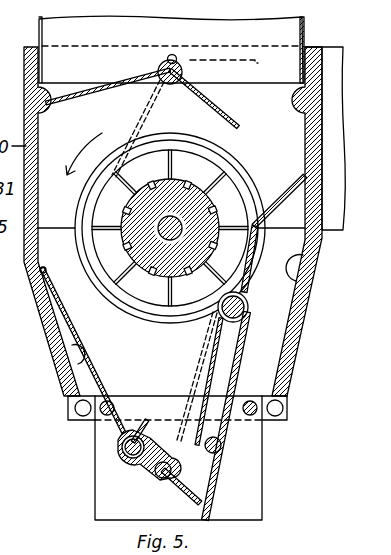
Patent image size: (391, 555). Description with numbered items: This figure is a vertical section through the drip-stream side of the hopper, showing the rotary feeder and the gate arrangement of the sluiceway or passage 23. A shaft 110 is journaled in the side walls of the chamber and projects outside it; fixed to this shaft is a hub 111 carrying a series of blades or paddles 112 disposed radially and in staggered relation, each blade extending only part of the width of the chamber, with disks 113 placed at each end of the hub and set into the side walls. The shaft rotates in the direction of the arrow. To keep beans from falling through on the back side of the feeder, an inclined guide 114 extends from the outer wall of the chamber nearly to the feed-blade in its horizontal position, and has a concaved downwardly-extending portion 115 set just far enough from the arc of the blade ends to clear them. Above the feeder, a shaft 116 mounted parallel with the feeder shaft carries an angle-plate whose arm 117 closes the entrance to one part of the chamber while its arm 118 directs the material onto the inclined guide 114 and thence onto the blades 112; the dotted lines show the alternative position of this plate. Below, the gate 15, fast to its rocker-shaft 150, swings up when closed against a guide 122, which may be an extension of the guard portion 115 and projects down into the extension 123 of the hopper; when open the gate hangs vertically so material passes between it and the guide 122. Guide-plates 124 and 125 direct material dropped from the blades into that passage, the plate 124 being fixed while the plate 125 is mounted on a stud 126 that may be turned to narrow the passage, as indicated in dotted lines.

The shaft 110 is at (103, 274).
The hub 111 is at (100, 213).
The blades or paddles 112 is at (213, 177).
The disks 113 is at (103, 243).
The inclined guide 114 is at (285, 193).
The downwardly-extending portion 115 is at (256, 262).
The shaft 116 is at (167, 84).
The arm 117 is at (101, 86).
The arm 118 is at (233, 61).
The guide 122 is at (205, 488).
The extension of the hopper 123 is at (262, 468).
The guide-plate 124 is at (98, 372).
The guide-plate 125 is at (200, 364).
The stud 126 is at (249, 308).
The rocker-shaft 150 is at (118, 442).
The gate 15 is at (170, 478).
The sluiceway or passage 23 is at (118, 498).